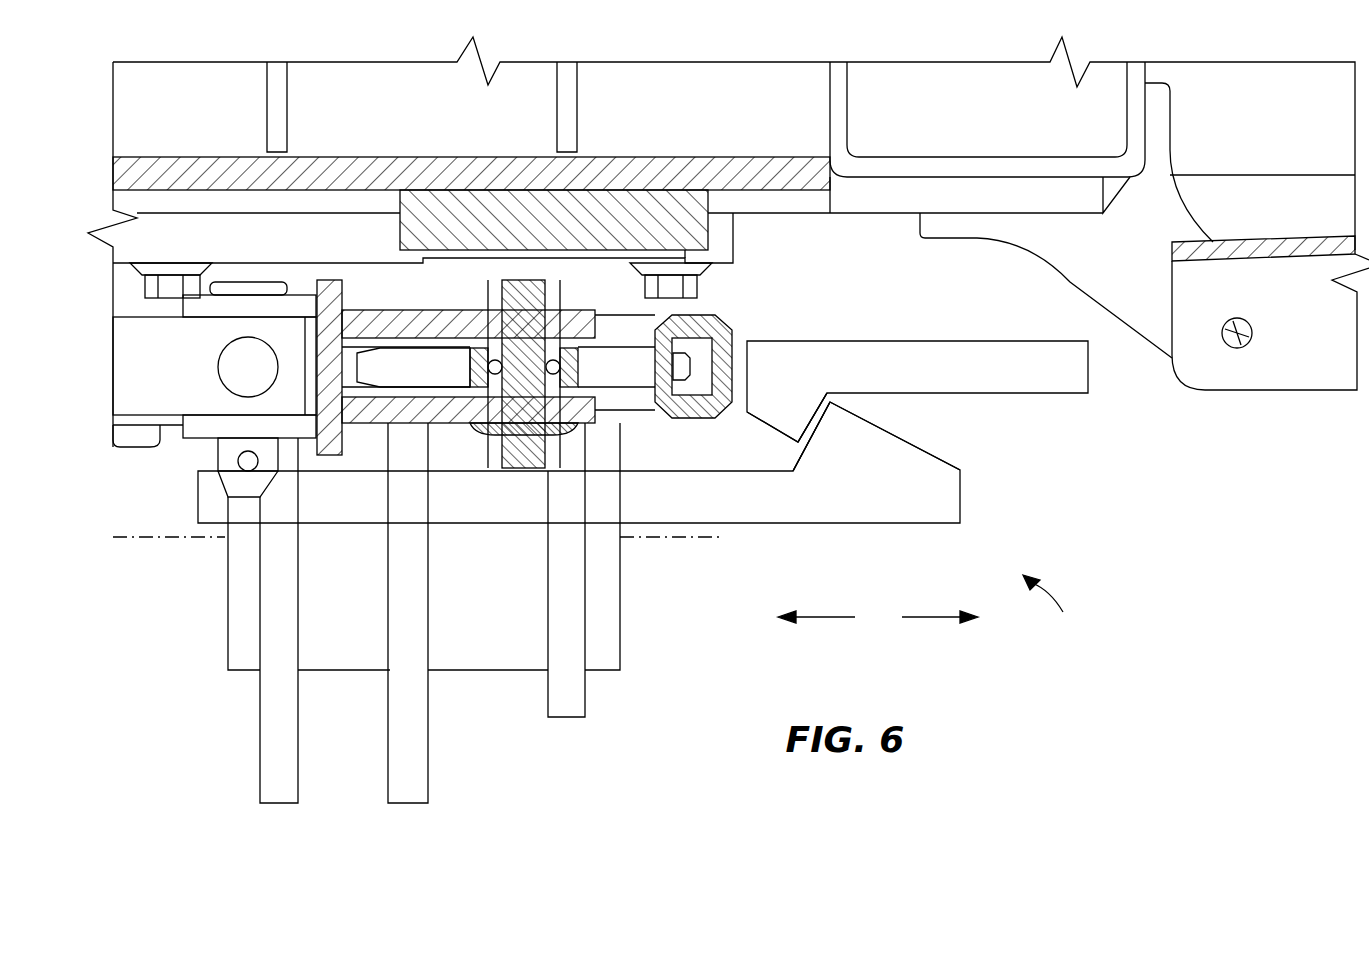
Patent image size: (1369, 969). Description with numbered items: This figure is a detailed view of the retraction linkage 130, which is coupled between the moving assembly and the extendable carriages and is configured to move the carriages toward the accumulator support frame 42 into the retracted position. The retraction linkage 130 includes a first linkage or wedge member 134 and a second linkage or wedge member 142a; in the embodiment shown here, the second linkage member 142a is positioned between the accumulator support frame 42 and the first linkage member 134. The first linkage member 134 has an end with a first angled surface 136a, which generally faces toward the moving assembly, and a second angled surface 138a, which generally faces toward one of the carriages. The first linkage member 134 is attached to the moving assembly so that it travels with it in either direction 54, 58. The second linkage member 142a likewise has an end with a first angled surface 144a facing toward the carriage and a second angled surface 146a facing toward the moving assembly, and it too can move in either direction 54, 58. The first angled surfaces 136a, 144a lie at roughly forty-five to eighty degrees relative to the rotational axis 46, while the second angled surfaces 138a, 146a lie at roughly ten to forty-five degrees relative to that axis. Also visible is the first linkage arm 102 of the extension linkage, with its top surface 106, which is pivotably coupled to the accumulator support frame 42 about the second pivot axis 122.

The accumulator support frame 42 is at (980, 115).
The rotational axis 46 is at (165, 540).
The direction 54 is at (930, 620).
The direction 58 is at (820, 620).
The first linkage arm 102 is at (1307, 340).
The top surface 106 is at (1265, 240).
The second pivot axis 122 is at (1232, 348).
The retraction linkage 130 is at (1065, 604).
The first linkage member 134 is at (790, 525).
The first angled surface 136a is at (795, 458).
The second angled surface 138a is at (920, 445).
The second linkage member 142a is at (1020, 340).
The first angled surface 144a is at (830, 400).
The second angled surface 146a is at (765, 430).